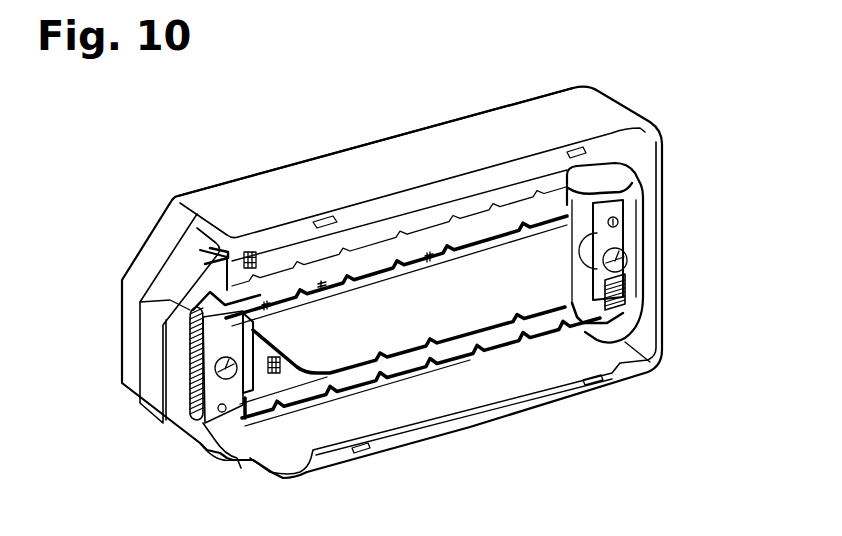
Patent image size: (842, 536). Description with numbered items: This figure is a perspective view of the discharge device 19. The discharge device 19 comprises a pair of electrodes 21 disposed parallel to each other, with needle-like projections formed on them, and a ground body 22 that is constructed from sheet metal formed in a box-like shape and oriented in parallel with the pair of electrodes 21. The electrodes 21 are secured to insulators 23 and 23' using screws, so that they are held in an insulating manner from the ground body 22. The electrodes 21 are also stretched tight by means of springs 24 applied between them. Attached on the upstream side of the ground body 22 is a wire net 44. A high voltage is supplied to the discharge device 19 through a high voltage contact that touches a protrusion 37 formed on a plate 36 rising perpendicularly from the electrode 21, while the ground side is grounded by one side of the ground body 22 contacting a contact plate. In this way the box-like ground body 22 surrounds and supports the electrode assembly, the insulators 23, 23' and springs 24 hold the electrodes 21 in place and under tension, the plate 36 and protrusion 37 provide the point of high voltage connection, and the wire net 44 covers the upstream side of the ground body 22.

The discharge device 19 is at (552, 78).
The electrodes 21 is at (422, 237).
The ground body 22 is at (218, 182).
The insulator 23 is at (150, 374).
The insulator 23' is at (657, 226).
The springs 24 is at (627, 297).
The plate 36 is at (190, 443).
The protrusion 37 is at (224, 412).
The wire net 44 is at (252, 250).